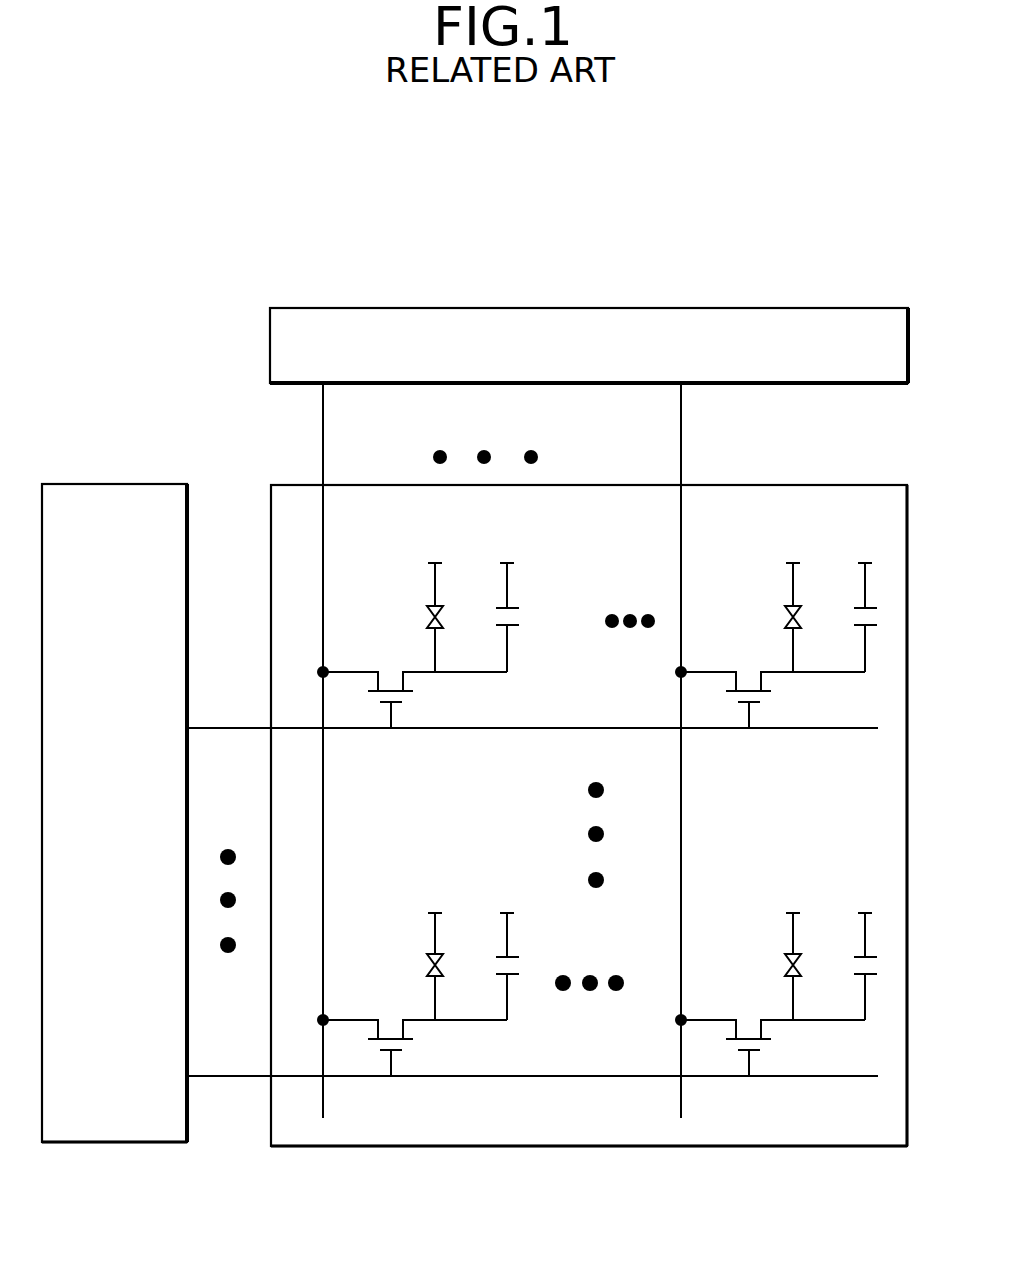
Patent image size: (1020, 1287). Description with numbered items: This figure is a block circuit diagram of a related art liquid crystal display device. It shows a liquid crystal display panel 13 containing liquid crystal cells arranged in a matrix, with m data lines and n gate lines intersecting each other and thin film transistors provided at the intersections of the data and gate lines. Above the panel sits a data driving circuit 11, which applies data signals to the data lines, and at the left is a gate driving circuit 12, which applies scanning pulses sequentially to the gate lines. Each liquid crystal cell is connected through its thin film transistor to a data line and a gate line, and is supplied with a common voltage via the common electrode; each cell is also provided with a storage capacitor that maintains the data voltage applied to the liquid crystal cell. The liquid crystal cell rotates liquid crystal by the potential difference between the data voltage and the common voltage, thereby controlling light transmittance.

The data driving circuit 11 is at (873, 308).
The gate driving circuit 12 is at (153, 484).
The liquid crystal display panel 13 is at (873, 485).